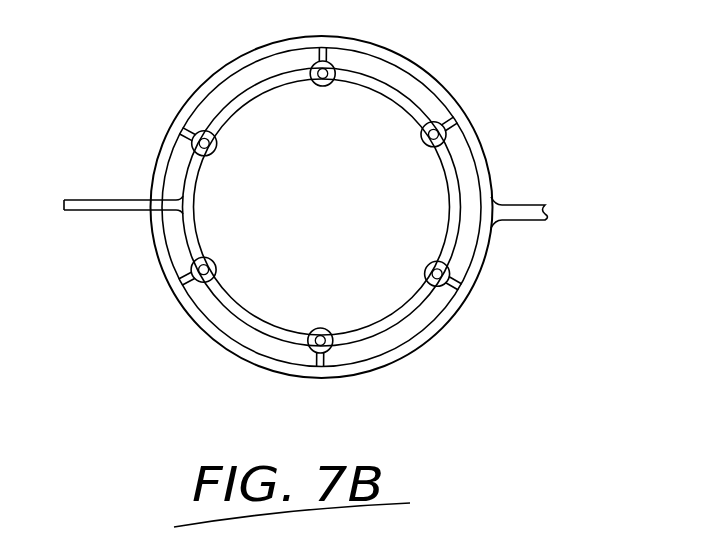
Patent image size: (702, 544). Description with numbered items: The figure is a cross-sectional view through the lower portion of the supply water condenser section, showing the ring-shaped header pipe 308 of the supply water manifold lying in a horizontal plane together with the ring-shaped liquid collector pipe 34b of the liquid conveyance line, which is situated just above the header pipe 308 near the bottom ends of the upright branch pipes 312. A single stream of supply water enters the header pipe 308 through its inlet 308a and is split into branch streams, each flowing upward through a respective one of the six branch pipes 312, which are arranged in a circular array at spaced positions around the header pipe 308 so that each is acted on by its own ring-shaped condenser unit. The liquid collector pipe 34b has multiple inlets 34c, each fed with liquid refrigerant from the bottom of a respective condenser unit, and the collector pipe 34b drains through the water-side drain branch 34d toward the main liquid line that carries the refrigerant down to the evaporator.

The liquid collector pipe 34b is at (424, 76).
The header pipe 308 is at (379, 90).
The inlet 308a is at (58, 216).
The water-side drain branch 34d is at (516, 215).
The inlets 34c is at (184, 128).
The branch pipes 312 is at (214, 141).